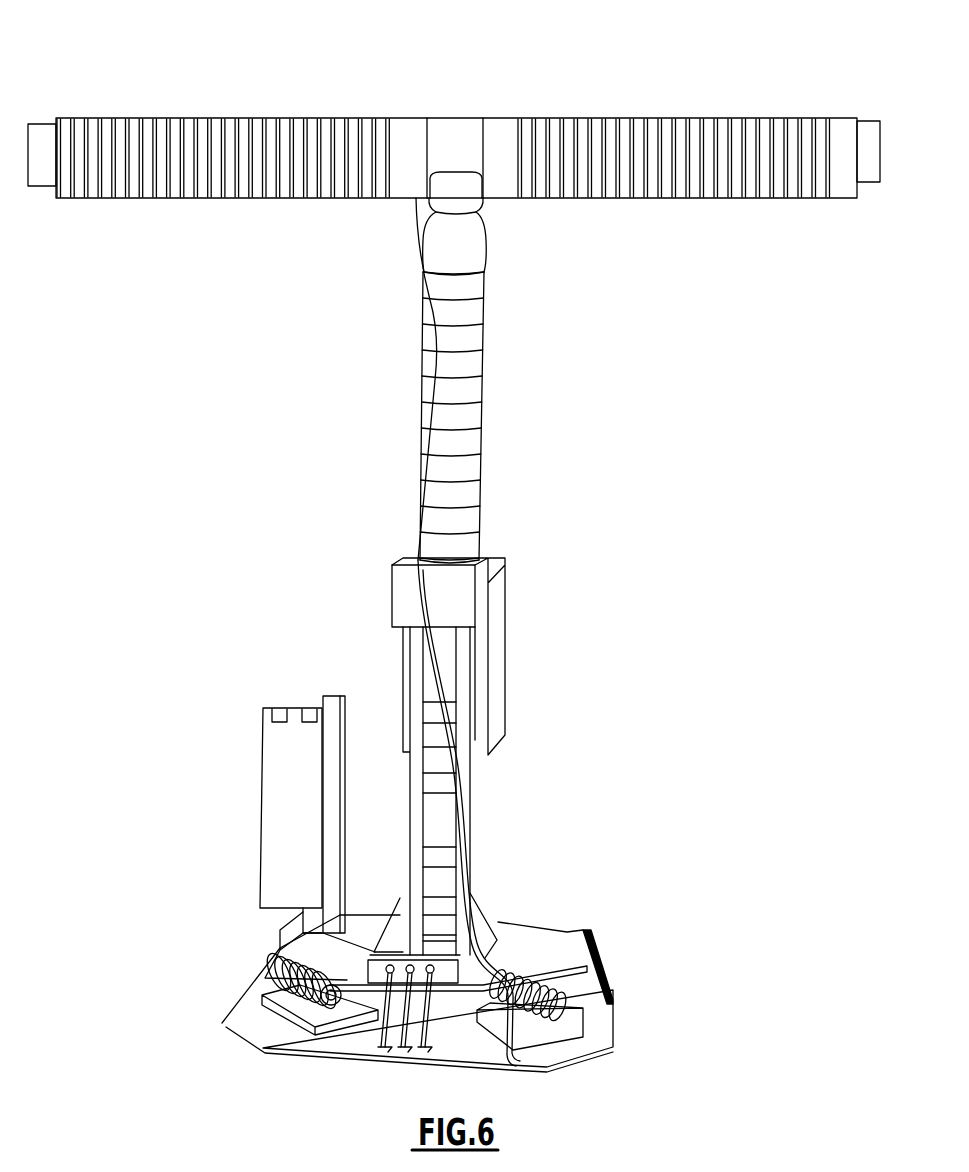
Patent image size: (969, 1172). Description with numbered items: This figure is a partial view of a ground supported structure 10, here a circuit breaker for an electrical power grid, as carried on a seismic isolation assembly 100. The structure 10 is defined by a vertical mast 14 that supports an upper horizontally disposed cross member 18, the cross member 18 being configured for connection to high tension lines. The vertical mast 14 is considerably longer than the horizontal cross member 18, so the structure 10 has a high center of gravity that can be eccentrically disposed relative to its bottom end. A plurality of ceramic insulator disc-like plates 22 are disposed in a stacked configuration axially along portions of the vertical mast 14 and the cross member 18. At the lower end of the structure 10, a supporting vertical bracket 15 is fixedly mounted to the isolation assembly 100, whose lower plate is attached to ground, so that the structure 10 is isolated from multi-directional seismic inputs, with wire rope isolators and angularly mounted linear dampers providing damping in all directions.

The structure 10 is at (210, 112).
The ceramic insulator disc-like plates 22 is at (763, 135).
The horizontal cross member 18 is at (867, 160).
The vertical mast 14 is at (471, 495).
The supporting vertical bracket 15 is at (472, 851).
The base assembly 100 is at (250, 977).